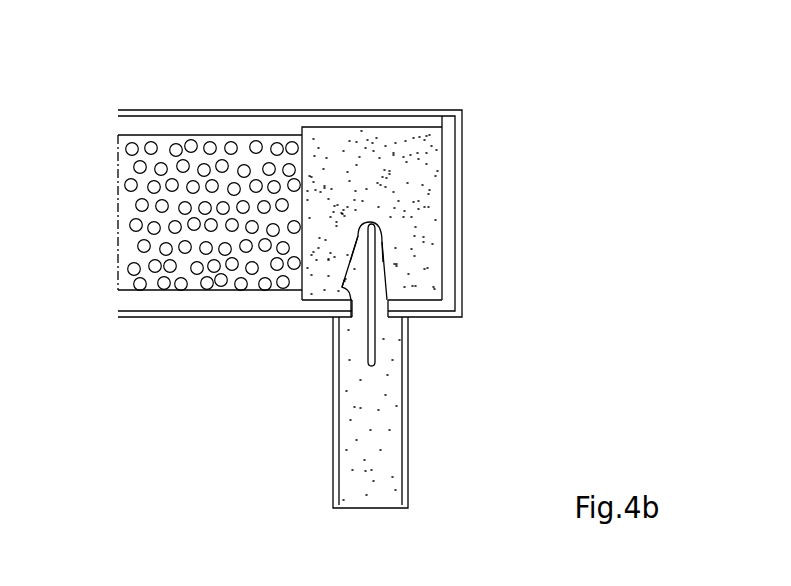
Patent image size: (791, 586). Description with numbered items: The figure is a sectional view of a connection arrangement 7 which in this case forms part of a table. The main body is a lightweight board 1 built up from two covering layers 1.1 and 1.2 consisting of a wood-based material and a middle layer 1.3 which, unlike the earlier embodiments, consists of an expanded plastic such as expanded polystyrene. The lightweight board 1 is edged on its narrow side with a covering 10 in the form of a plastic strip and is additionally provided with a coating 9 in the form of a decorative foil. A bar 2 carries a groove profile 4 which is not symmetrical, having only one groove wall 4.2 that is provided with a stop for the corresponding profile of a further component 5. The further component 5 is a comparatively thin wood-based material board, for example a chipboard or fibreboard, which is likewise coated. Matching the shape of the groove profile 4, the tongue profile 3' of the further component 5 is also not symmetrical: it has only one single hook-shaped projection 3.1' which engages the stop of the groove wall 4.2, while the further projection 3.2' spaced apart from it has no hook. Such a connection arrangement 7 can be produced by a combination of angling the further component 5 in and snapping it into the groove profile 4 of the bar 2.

The lightweight board 1 is at (158, 120).
The covering layer 1.1 is at (127, 124).
The covering layer 1.2 is at (128, 300).
The middle layer 1.3 is at (128, 226).
The bar 2 is at (345, 137).
The tongue profile 3' is at (407, 216).
The hook-shaped projection 3.1' is at (440, 298).
The further projection 3.2' is at (459, 251).
The groove profile 4 is at (371, 222).
The groove wall 4.2 is at (350, 258).
The further component 5 is at (438, 452).
The connection arrangement 7 is at (503, 78).
The coating 9 is at (260, 110).
The covering 10 is at (447, 182).